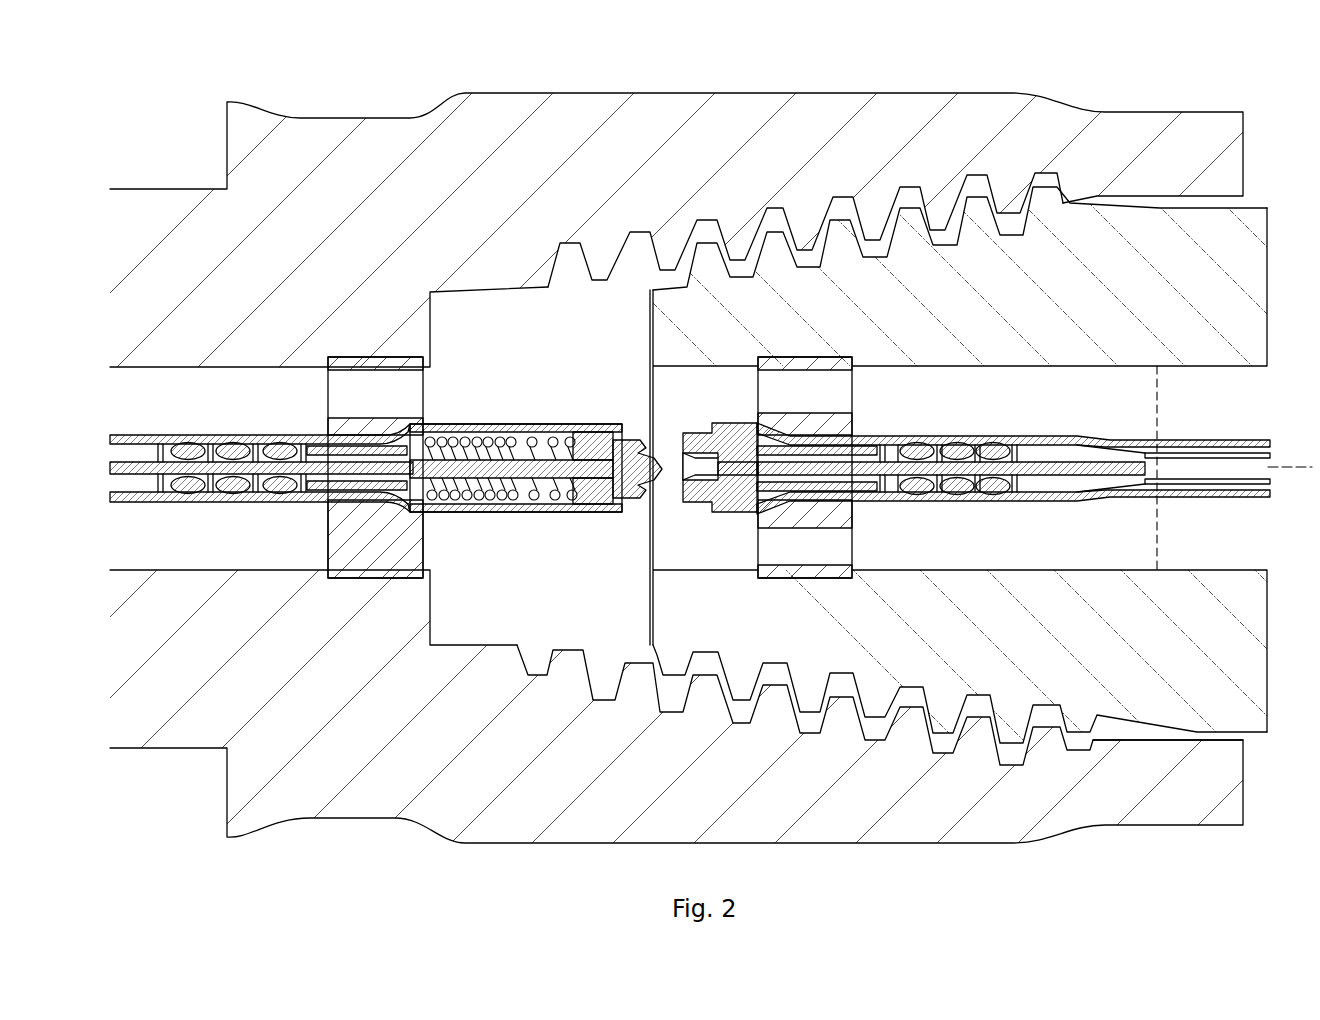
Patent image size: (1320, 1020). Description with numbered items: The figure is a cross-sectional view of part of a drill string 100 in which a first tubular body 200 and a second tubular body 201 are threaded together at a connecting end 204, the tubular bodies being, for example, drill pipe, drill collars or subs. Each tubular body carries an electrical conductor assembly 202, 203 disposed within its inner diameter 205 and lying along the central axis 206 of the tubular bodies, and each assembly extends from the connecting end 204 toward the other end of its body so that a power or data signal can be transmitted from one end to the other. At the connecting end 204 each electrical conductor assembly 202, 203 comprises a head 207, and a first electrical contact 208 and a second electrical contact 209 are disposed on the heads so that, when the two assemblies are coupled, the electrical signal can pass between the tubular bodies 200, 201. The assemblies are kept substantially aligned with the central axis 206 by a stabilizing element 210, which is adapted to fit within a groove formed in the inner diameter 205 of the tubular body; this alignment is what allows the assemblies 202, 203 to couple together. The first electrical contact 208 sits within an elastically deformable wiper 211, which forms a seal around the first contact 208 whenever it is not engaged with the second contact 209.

The drill string 100 is at (175, 62).
The first tubular body 200 is at (365, 92).
The second tubular body 201 is at (1278, 652).
The electrical conductor assembly 202 is at (280, 410).
The electrical conductor assembly 203 is at (1030, 405).
The connecting end 204 is at (712, 64).
The inner diameter 205 is at (1166, 379).
The central axis 206 is at (1292, 447).
The head 207 is at (596, 514).
The first electrical contact 208 is at (661, 496).
The second electrical contact 209 is at (681, 458).
The stabilizing element 210 is at (312, 528).
The wiper 211 is at (662, 442).